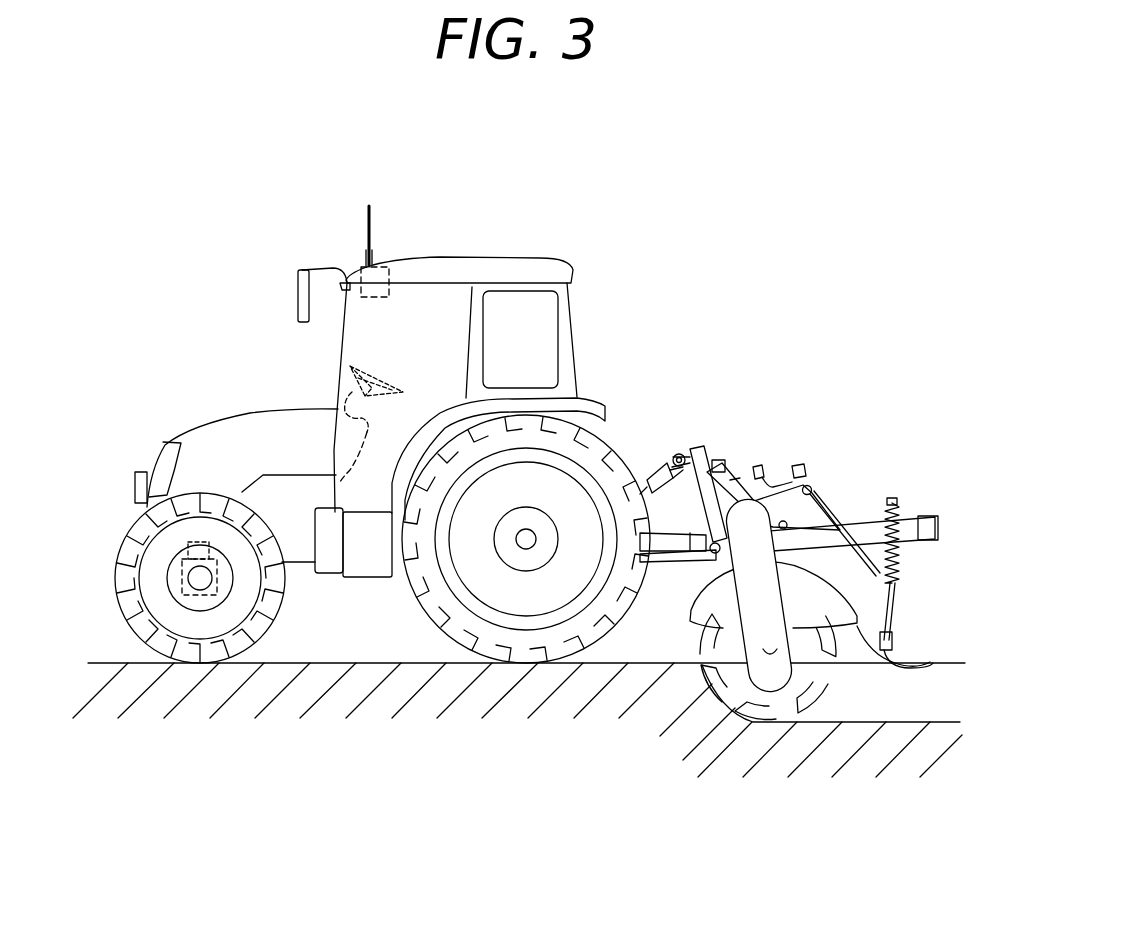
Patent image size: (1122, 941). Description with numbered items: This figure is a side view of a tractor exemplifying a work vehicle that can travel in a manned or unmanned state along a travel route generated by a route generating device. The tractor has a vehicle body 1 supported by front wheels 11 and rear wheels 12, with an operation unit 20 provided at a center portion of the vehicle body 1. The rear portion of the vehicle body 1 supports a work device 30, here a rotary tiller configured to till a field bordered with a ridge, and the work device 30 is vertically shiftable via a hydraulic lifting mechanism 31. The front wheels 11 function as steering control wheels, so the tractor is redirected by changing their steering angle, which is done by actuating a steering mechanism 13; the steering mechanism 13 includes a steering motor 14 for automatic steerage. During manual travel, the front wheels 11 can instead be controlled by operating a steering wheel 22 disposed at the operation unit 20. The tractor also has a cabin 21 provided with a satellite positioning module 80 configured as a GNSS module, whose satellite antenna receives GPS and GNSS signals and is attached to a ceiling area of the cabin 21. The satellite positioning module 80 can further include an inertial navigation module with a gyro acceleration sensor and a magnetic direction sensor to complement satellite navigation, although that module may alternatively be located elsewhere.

The vehicle body 1 is at (331, 590).
The front wheels 11 is at (193, 662).
The rear wheels 12 is at (535, 652).
The steering mechanism 13 is at (180, 579).
The steering motor 14 is at (167, 544).
The operation unit 20 is at (409, 366).
The cabin 21 is at (573, 276).
The steering wheel 22 is at (370, 366).
The work device 30 is at (769, 705).
The hydraulic lifting mechanism 31 is at (715, 440).
The satellite positioning module 80 is at (380, 250).